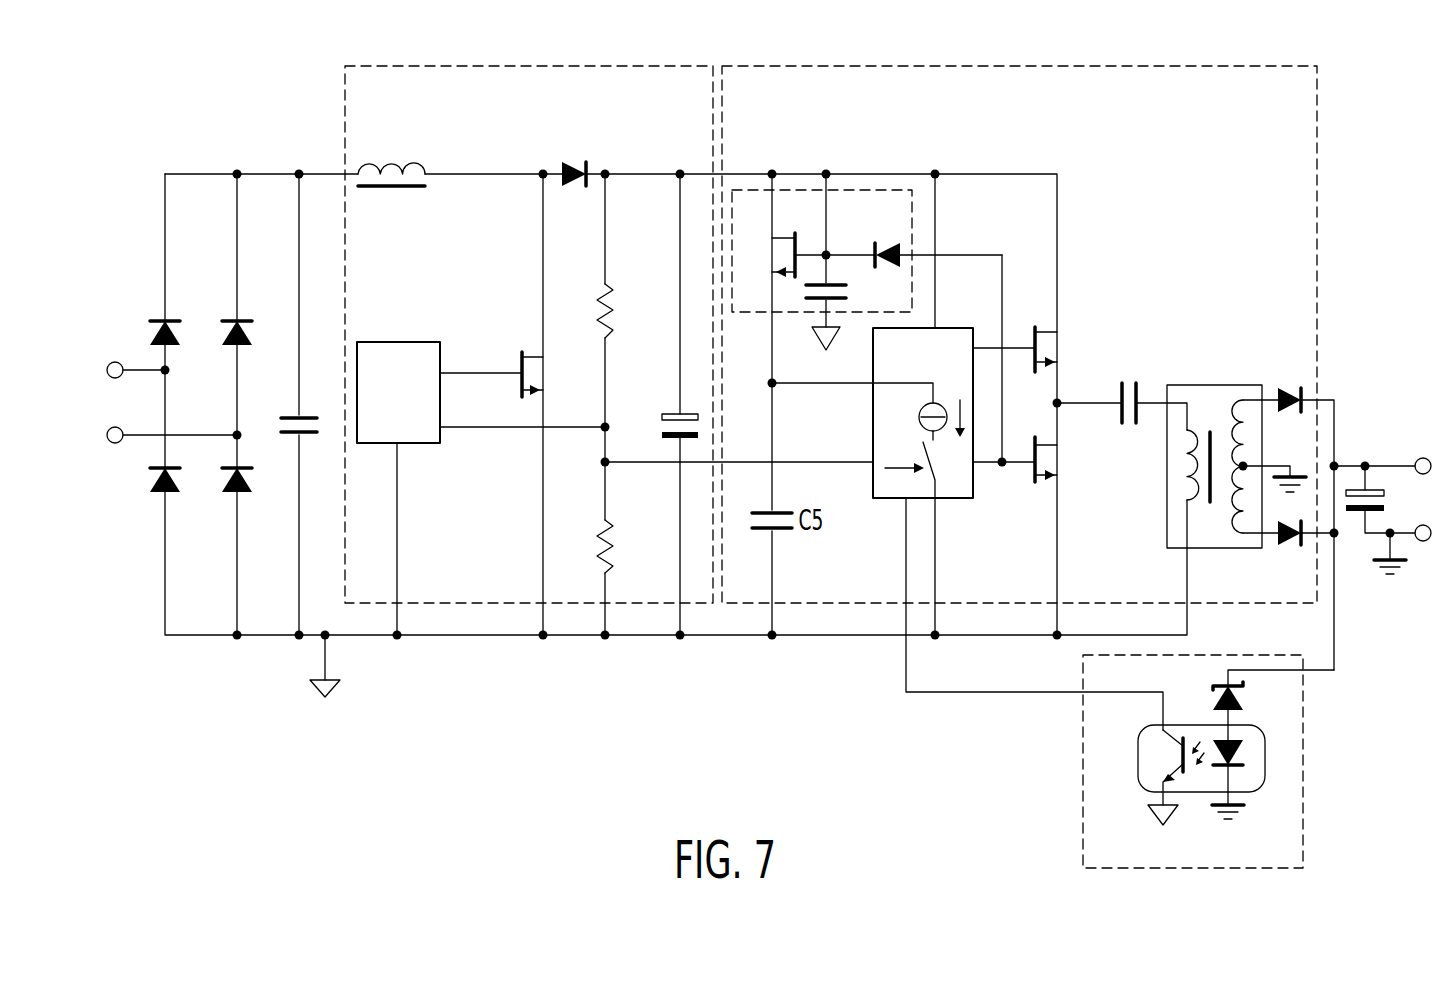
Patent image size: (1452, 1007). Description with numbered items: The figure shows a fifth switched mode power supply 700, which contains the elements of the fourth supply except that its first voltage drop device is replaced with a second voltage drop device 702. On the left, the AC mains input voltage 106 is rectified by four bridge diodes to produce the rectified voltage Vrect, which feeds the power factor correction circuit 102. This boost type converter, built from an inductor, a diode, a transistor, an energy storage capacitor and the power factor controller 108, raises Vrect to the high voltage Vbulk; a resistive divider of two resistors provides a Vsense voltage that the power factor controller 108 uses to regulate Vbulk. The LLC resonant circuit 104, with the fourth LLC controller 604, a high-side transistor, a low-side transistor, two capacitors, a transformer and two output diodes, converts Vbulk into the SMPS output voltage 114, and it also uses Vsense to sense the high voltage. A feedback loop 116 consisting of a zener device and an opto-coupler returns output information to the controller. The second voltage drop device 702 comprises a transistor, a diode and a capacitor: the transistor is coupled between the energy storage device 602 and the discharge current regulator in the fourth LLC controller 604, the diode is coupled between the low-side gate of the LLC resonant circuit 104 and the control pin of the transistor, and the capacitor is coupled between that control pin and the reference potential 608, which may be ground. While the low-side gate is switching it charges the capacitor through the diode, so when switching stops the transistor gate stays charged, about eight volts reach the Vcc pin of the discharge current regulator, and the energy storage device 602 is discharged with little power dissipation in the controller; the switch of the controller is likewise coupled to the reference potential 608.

The fifth switched mode power supply 700 is at (142, 103).
The AC mains input voltage 106 is at (116, 361).
The power factor correction circuit 102 is at (605, 66).
The power factor controller 108 is at (381, 426).
The energy storage device 602 is at (660, 435).
The LLC resonant circuit 104 is at (1128, 66).
The second voltage drop device 702 is at (878, 190).
The fourth LLC controller 604 is at (955, 500).
The reference potential 608 is at (315, 690).
The SMPS output voltage 114 is at (1422, 452).
The feedback loop 116 is at (1083, 755).